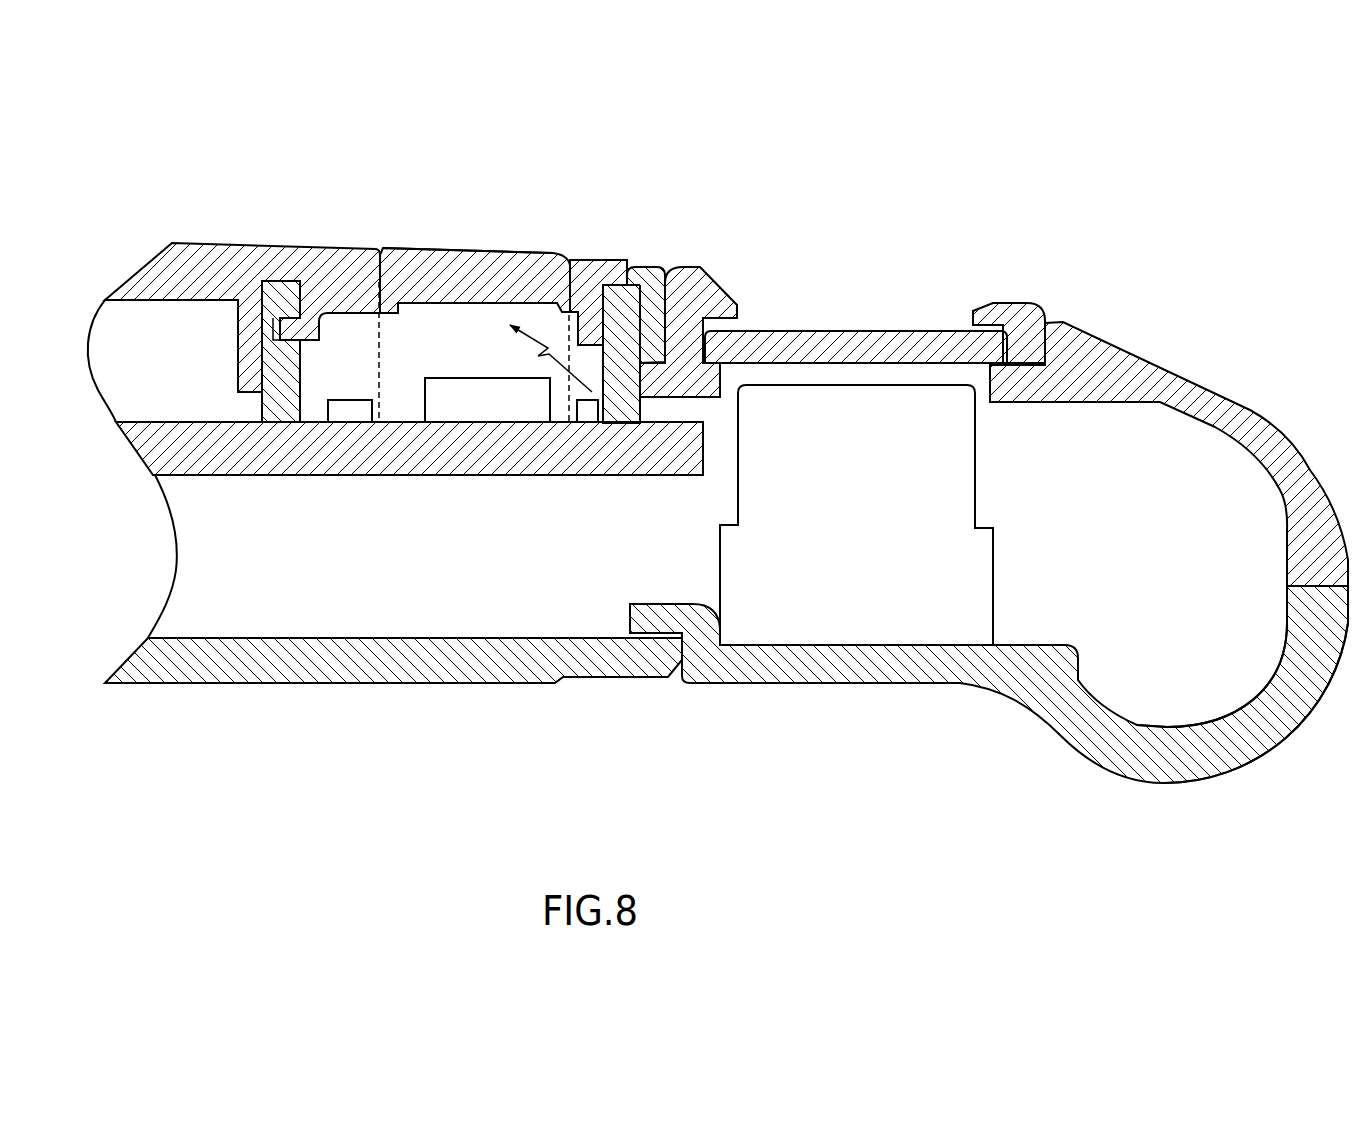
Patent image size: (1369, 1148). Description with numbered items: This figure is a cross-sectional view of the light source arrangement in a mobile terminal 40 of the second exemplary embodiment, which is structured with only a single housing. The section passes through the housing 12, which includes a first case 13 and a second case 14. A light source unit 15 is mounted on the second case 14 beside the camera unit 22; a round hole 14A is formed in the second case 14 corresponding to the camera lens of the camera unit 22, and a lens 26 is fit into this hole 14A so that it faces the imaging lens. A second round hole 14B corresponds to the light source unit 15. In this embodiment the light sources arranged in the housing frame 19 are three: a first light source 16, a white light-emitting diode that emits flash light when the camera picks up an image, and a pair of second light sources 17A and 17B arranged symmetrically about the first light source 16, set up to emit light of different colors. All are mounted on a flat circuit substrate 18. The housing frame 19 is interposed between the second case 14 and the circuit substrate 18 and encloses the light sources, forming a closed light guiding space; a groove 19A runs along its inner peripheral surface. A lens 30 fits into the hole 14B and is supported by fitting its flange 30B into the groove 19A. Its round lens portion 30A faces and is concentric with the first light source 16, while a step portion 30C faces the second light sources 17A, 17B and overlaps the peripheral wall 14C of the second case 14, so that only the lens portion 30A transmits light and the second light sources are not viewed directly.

The second housing 12 is at (944, 761).
The first case 13 is at (1257, 765).
The second case 14 is at (1221, 389).
The round hole 14A is at (985, 305).
The round hole 14B is at (553, 257).
The peripheral wall 14C is at (377, 257).
The light source unit 15 is at (392, 370).
The first light source 16 is at (500, 400).
The second light source 17A is at (372, 405).
The second light source 17B is at (590, 405).
The circuit substrate 18 is at (305, 475).
The housing frame 19 is at (258, 407).
The groove 19A is at (300, 316).
The camera unit 22 is at (981, 466).
The lens 26 is at (850, 331).
The lens 30 is at (477, 245).
The lens portion 30A is at (427, 248).
The flange 30B is at (641, 283).
The step portion 30C is at (328, 302).
The mobile terminal 40 is at (1128, 856).